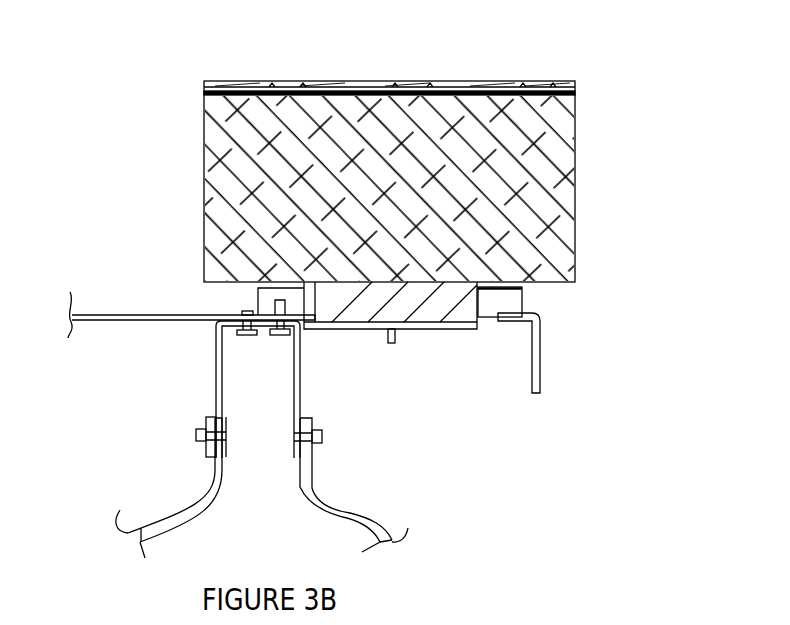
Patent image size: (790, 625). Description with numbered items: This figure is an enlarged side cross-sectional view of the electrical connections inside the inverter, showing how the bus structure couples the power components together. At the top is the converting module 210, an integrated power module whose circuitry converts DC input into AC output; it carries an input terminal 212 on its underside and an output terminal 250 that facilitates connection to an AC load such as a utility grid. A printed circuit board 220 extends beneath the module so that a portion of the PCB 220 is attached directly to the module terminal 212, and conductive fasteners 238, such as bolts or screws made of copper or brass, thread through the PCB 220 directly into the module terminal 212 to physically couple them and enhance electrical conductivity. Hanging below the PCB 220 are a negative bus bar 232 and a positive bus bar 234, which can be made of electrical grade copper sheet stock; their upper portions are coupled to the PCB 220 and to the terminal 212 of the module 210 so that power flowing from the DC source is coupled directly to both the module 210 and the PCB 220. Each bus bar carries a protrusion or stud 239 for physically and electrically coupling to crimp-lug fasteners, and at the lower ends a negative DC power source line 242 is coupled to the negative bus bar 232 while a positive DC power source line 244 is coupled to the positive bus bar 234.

The converting module 210 is at (563, 127).
The input terminal 212 is at (304, 299).
The printed circuit board 220 is at (118, 314).
The negative bus bar 232 is at (300, 382).
The positive bus bar 234 is at (216, 375).
The conductive fastener 238 is at (243, 336).
The protrusion 239 is at (197, 435).
The negative DC power source line 242 is at (347, 508).
The positive DC power source line 244 is at (183, 513).
The output terminal 250 is at (548, 330).